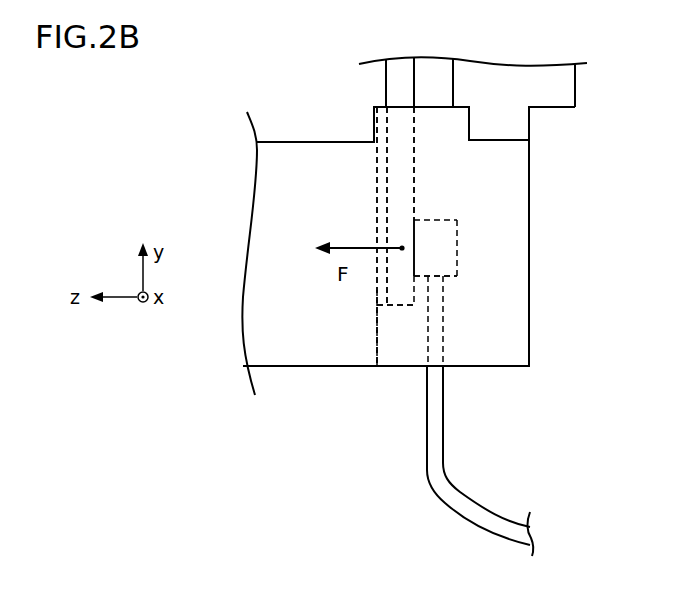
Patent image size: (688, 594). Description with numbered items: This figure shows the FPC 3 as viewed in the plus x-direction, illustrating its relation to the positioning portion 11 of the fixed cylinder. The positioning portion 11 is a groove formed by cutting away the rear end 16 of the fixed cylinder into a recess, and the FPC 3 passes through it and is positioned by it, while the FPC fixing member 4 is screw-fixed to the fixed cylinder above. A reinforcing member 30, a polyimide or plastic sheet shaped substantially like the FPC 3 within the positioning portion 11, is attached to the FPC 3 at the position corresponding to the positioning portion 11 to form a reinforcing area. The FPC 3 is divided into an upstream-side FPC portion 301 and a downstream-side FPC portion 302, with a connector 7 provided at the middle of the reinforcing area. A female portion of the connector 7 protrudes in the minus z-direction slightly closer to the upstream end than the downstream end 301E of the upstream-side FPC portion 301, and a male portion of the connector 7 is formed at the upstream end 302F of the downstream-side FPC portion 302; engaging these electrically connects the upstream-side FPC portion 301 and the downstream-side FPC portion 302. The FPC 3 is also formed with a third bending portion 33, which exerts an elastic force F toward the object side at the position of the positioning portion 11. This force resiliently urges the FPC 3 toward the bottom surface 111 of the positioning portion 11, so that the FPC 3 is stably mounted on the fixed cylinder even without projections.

The FPC fixing member 4 is at (520, 77).
The positioning portion 11 is at (492, 134).
The FPC 3 is at (403, 157).
The bottom surface 111 is at (375, 175).
The upstream-side FPC portion 301 is at (403, 201).
The connector 7 is at (448, 243).
The upstream end 302F is at (438, 277).
The rear end 16 is at (528, 315).
The downstream-side FPC portion 302 is at (444, 387).
The reinforcing member 30 is at (381, 302).
The downstream end 301E is at (397, 308).
The third bending portion 33 is at (437, 497).